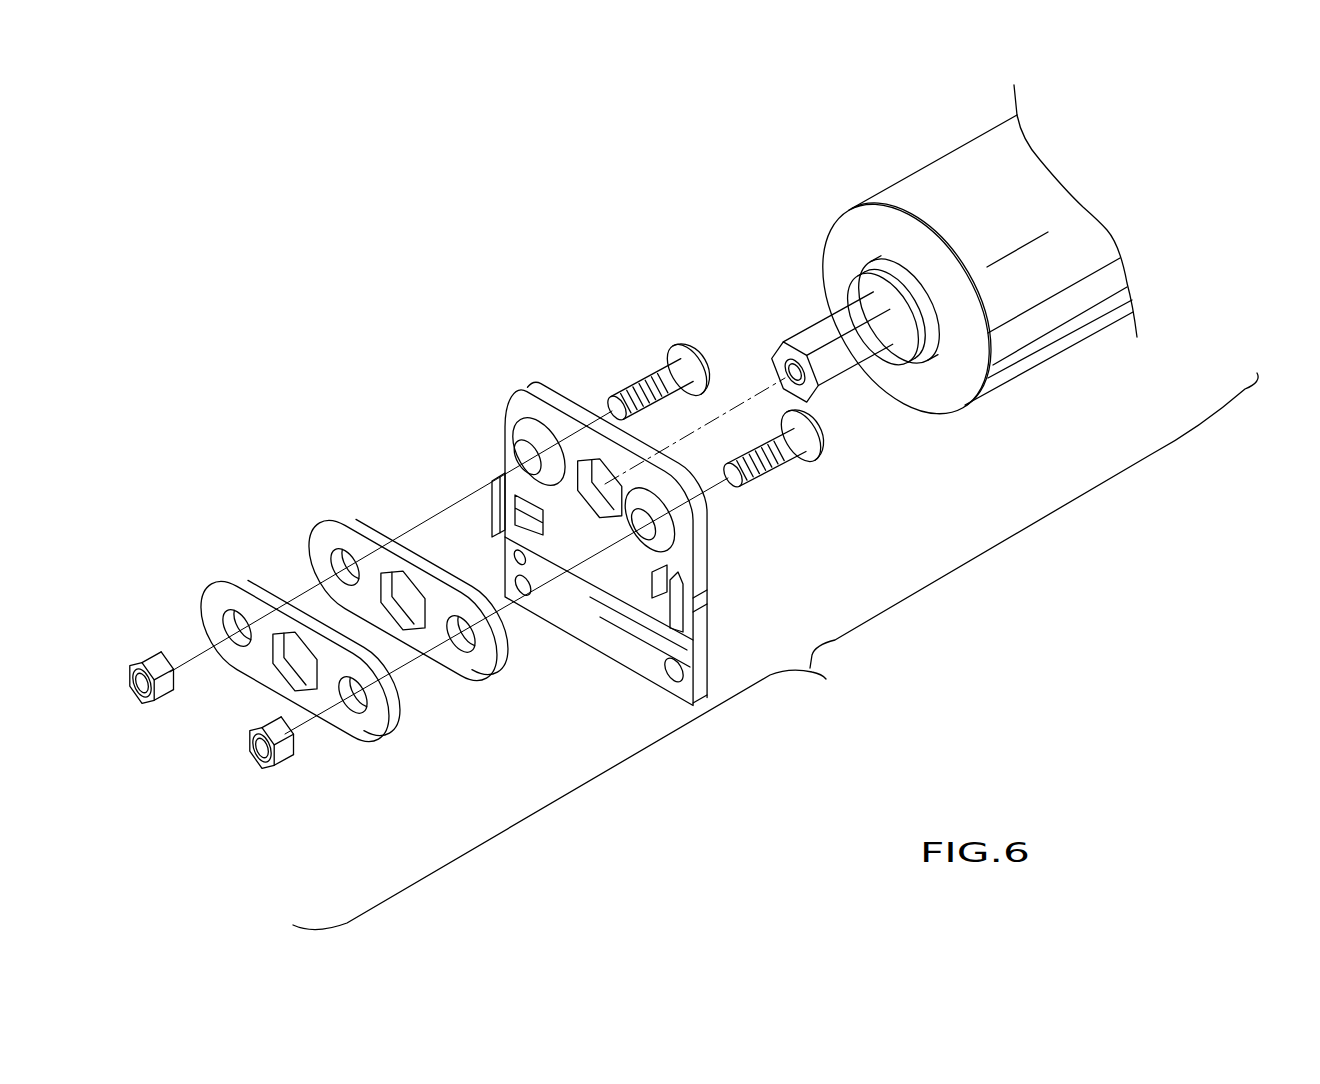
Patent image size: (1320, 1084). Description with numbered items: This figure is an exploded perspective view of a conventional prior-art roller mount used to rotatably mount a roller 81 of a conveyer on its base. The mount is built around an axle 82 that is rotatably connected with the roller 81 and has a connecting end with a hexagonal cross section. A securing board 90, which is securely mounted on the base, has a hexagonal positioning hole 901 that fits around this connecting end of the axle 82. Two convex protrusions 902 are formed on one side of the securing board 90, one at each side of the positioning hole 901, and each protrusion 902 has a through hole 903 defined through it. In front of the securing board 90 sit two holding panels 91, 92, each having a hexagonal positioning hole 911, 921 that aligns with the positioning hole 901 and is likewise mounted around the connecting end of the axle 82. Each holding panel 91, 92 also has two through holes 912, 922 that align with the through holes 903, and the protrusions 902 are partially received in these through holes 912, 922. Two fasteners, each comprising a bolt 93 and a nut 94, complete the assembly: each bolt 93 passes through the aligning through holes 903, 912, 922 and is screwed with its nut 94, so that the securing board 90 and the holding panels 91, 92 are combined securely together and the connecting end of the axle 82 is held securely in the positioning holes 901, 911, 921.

The roller 81 is at (1047, 357).
The axle 82 is at (813, 332).
The securing board 90 is at (603, 521).
The positioning hole 901 is at (607, 457).
The convex protrusions 902 is at (530, 437).
The through hole 903 is at (687, 563).
The holding panel 91 is at (429, 591).
The positioning hole 911 is at (420, 587).
The through hole 912 is at (470, 655).
The holding panel 92 is at (310, 652).
The positioning hole 921 is at (280, 668).
The through hole 922 is at (355, 708).
The bolt 93 is at (797, 462).
The nut 94 is at (283, 770).